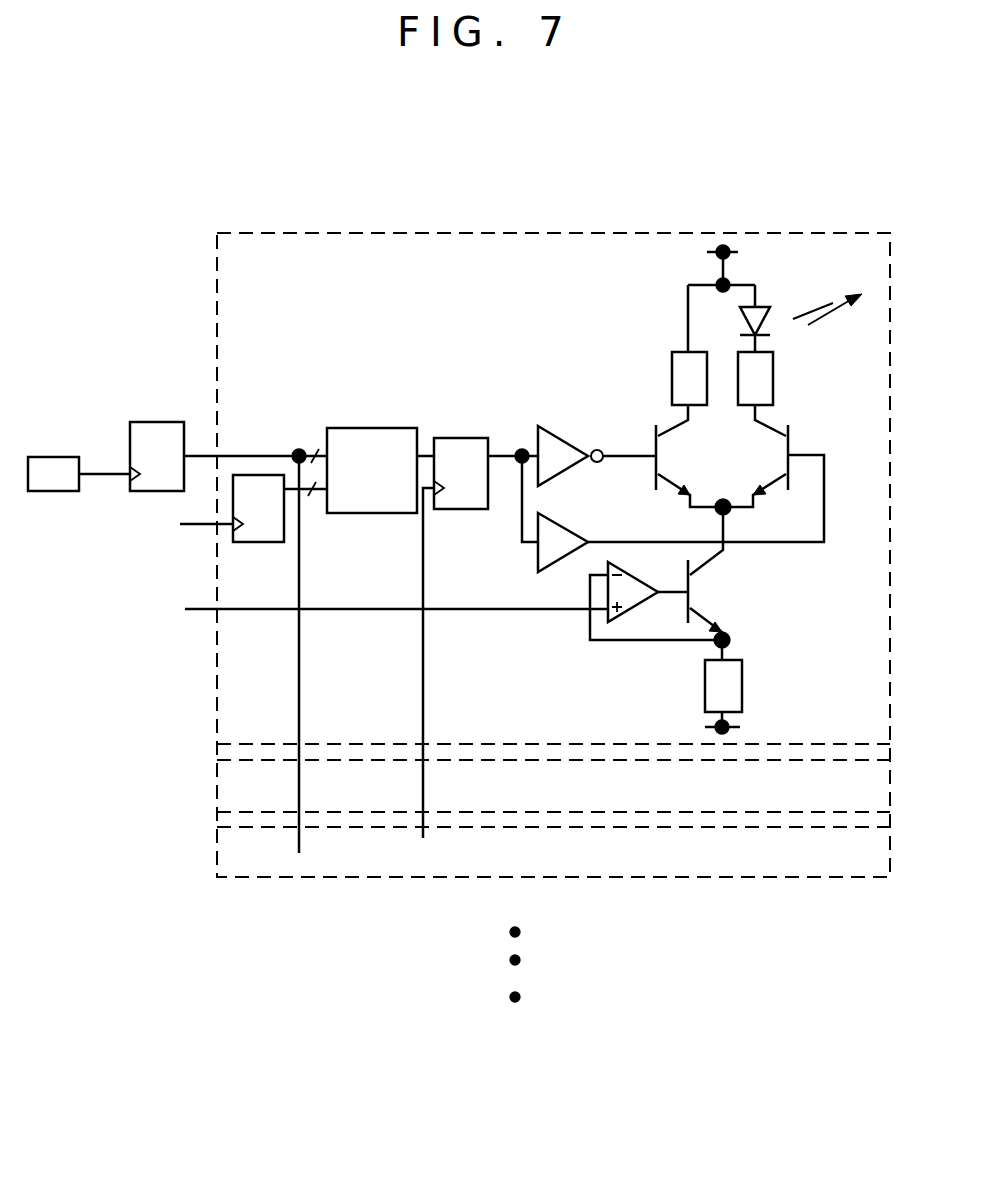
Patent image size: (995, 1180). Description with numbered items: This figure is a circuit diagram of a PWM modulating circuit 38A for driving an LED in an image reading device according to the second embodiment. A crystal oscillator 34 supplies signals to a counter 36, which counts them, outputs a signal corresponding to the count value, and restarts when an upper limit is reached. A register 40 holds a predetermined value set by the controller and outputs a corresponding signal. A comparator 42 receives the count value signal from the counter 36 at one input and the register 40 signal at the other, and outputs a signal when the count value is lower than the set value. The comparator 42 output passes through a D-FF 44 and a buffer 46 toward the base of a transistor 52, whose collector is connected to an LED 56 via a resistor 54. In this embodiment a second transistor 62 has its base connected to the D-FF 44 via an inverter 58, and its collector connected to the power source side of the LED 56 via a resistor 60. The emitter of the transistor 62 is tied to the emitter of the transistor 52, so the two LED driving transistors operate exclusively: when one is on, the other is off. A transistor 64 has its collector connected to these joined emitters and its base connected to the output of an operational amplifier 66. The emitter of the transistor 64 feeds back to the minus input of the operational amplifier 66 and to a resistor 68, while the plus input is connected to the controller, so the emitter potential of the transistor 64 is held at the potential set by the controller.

The crystal oscillator 34 is at (50, 492).
The counter 36 is at (145, 492).
The PWM modulating circuit 38A is at (462, 233).
The register 40 is at (260, 543).
The comparator 42 is at (380, 515).
The D-FF 44 is at (458, 510).
The buffer 46 is at (538, 550).
The transistor 52 is at (795, 438).
The resistor 54 is at (775, 385).
The LED 56 is at (760, 305).
The inverter 58 is at (588, 432).
The resistor 60 is at (673, 352).
The transistor 62 is at (662, 470).
The transistor 64 is at (712, 568).
The operational amplifier 66 is at (640, 610).
The resistor 68 is at (744, 688).